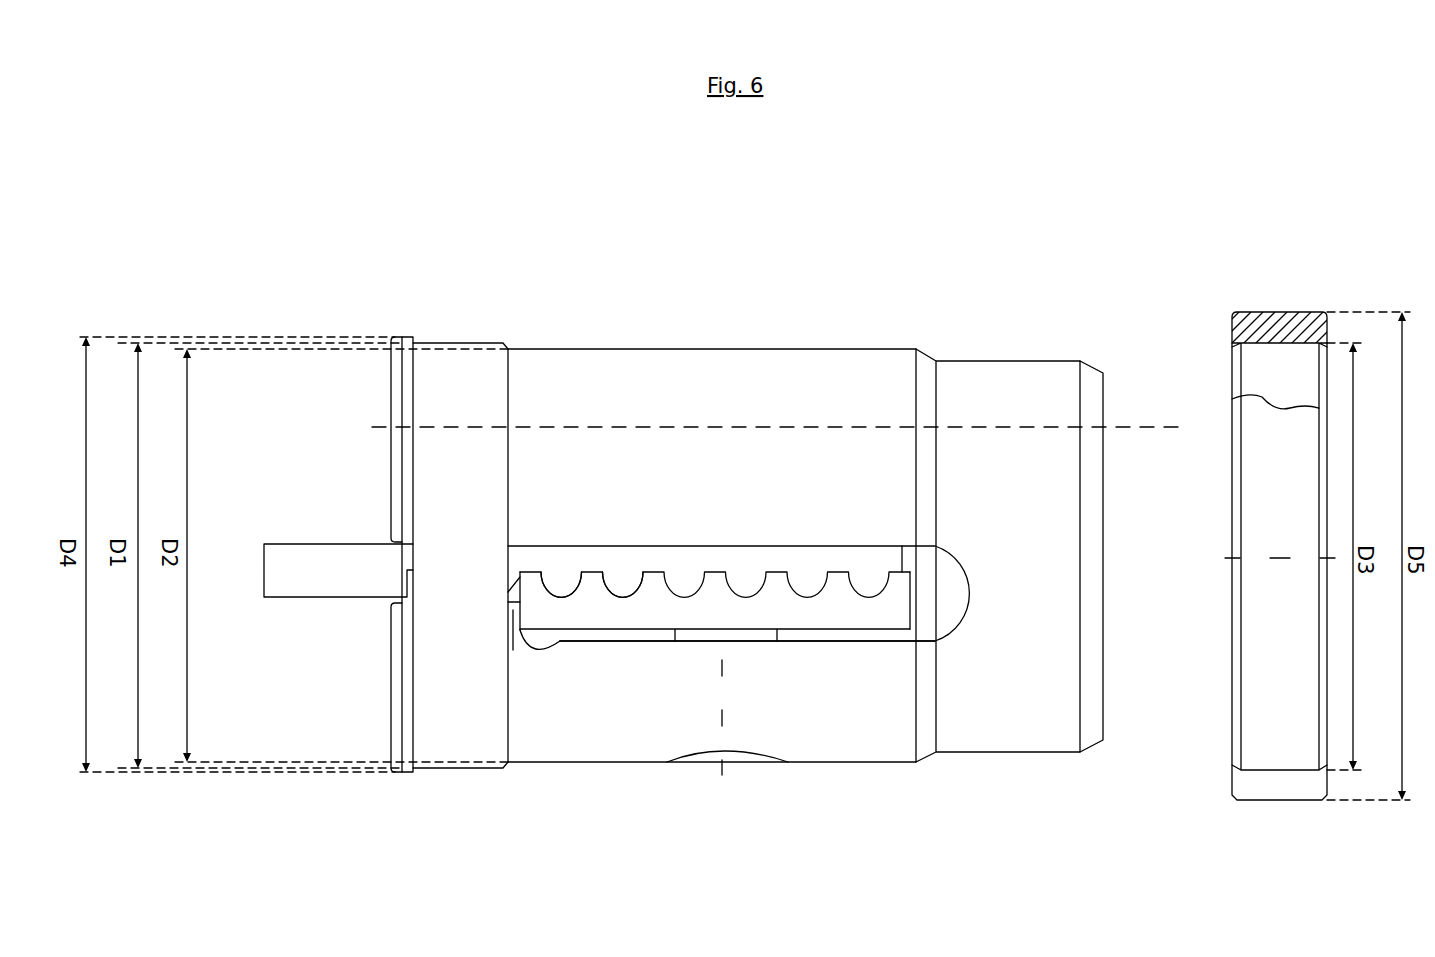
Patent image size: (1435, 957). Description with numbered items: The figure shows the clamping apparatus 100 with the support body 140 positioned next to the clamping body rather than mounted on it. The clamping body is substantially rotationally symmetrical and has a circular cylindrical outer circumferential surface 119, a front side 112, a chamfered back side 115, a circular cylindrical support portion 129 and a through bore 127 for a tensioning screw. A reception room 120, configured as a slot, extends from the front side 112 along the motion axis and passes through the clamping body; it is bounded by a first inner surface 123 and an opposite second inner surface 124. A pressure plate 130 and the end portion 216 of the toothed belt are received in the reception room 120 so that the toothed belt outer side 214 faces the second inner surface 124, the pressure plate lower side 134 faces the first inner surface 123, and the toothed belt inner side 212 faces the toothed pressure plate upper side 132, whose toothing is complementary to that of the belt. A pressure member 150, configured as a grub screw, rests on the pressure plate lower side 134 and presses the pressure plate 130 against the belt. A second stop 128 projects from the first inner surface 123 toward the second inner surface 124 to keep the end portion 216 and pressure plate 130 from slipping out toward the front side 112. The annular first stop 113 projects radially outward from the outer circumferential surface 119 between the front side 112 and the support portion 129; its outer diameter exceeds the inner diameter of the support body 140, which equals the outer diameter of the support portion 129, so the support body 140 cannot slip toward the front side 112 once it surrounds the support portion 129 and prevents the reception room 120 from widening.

The clamping apparatus 100 is at (278, 245).
The front side 112 is at (390, 665).
The first stop 113 is at (402, 772).
The back side 115 is at (1105, 630).
The outer circumferential surface 119 is at (820, 362).
The reception room 120 is at (935, 617).
The first inner surface 123 is at (885, 643).
The second inner surface 124 is at (715, 570).
The through bore 127 is at (873, 410).
The second stop 128 is at (515, 617).
The support portion 129 is at (464, 341).
The pressure plate 130 is at (838, 615).
The pressure plate upper side 132 is at (625, 603).
The pressure plate lower side 134 is at (798, 630).
The support body 140 is at (1275, 312).
The pressure member 150 is at (683, 636).
The toothed belt inner side 212 is at (623, 580).
The toothed belt outer side 214 is at (663, 571).
The end portion 216 is at (307, 585).